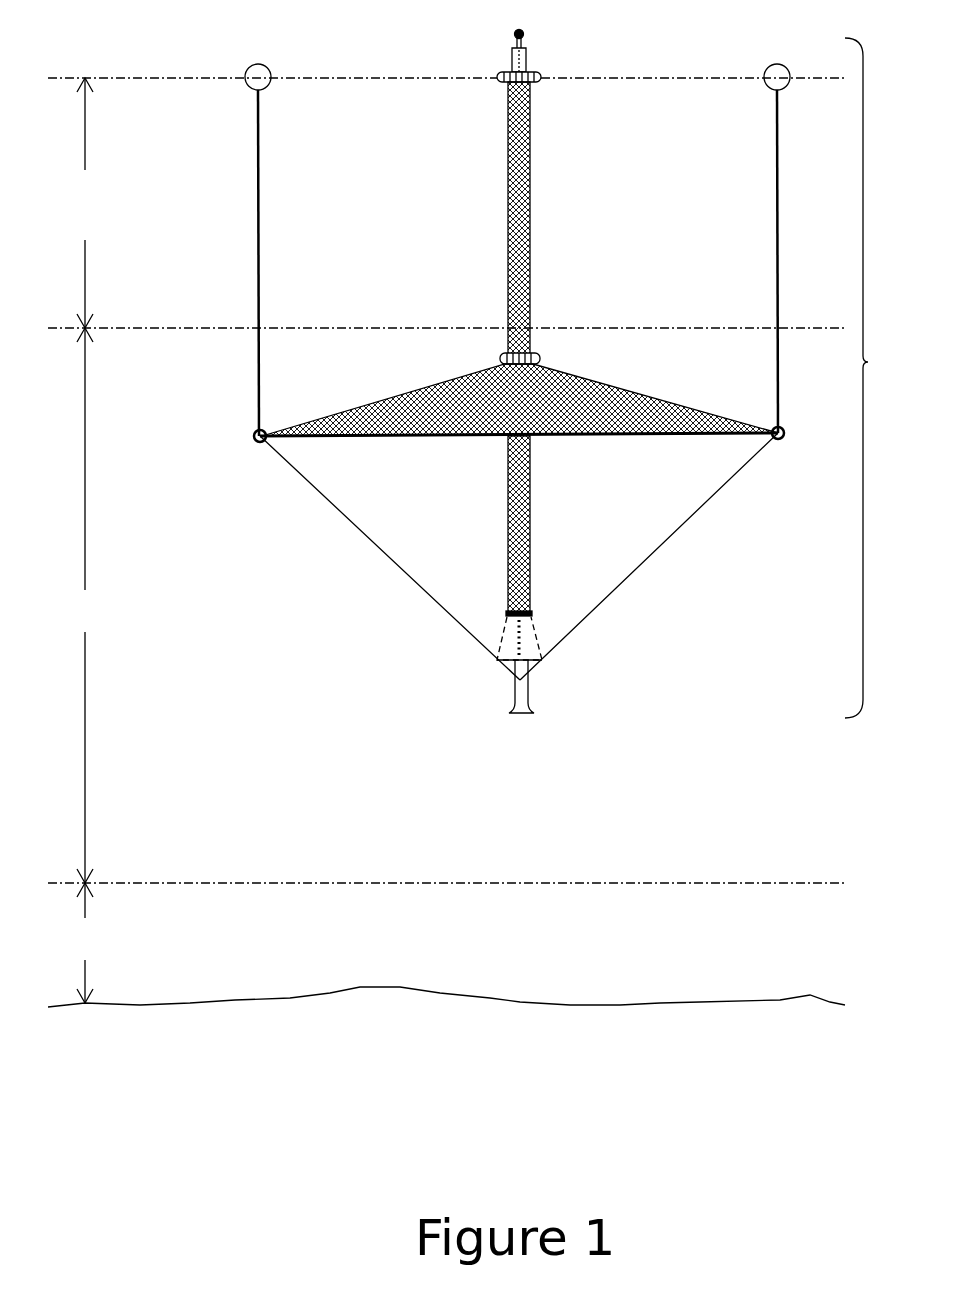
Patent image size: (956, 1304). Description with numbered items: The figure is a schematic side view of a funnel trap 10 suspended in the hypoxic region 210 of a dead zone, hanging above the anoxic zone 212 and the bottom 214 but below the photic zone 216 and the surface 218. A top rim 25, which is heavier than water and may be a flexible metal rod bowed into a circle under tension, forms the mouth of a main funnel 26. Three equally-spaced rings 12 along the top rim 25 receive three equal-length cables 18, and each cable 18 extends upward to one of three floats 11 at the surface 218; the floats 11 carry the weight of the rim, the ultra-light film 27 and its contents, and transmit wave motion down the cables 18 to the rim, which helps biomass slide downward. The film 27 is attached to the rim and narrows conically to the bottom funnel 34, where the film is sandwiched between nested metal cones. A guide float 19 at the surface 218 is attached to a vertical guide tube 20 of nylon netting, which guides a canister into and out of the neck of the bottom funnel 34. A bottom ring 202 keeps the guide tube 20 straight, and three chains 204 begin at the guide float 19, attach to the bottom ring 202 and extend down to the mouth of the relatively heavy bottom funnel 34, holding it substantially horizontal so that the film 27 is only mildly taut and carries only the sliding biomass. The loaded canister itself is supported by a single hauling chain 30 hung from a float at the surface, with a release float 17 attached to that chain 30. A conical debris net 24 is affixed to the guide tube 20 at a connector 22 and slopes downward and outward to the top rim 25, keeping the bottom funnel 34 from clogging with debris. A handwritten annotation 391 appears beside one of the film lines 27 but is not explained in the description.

The funnel trap 10 is at (868, 362).
The floats 11 is at (270, 70).
The rings 12 is at (253, 443).
The release float 17 is at (497, 47).
The cables 18 is at (262, 210).
The guide float 19 is at (500, 82).
The guide tube 20 is at (506, 209).
The connector 22 is at (500, 358).
The debris net 24 is at (408, 395).
The top rim 25 is at (480, 440).
The main funnel 26 is at (554, 524).
The film 27 is at (397, 563).
The hauling chain 30 is at (520, 618).
The bottom funnel 34 is at (520, 677).
The bottom ring 202 is at (505, 613).
The chains 204 is at (535, 618).
The hypoxic region 210 is at (446, 605).
The anoxic zone 212 is at (118, 943).
The bottom 214 is at (302, 1003).
The photic zone 216 is at (446, 203).
The surface 218 is at (192, 80).
The annotation 391 is at (690, 520).